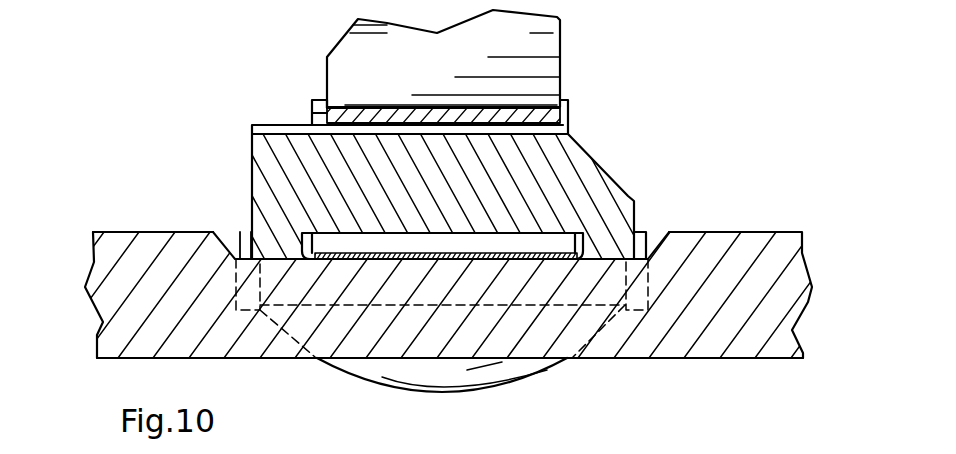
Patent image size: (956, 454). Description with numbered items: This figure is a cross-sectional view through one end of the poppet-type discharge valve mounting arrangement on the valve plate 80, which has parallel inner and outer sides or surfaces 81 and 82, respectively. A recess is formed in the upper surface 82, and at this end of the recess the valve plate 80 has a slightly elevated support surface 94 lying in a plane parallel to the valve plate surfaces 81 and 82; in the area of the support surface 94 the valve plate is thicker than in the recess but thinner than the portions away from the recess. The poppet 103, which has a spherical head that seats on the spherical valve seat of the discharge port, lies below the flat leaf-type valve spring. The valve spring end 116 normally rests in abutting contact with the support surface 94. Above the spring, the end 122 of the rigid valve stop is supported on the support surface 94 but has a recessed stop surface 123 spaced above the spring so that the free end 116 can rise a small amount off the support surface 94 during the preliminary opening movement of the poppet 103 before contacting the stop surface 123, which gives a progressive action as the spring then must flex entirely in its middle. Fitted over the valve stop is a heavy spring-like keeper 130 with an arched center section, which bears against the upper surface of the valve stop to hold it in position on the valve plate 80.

The valve plate 80 is at (118, 267).
The inner side of the valve plate 81 is at (137, 358).
The outer side of the valve plate 82 is at (155, 232).
The support surface 94 is at (245, 232).
The poppet 103 is at (488, 377).
The valve spring end 116 is at (418, 253).
The end of the valve stop 122 is at (585, 180).
The recessed stop surface 123 is at (515, 234).
The keeper 130 is at (549, 45).